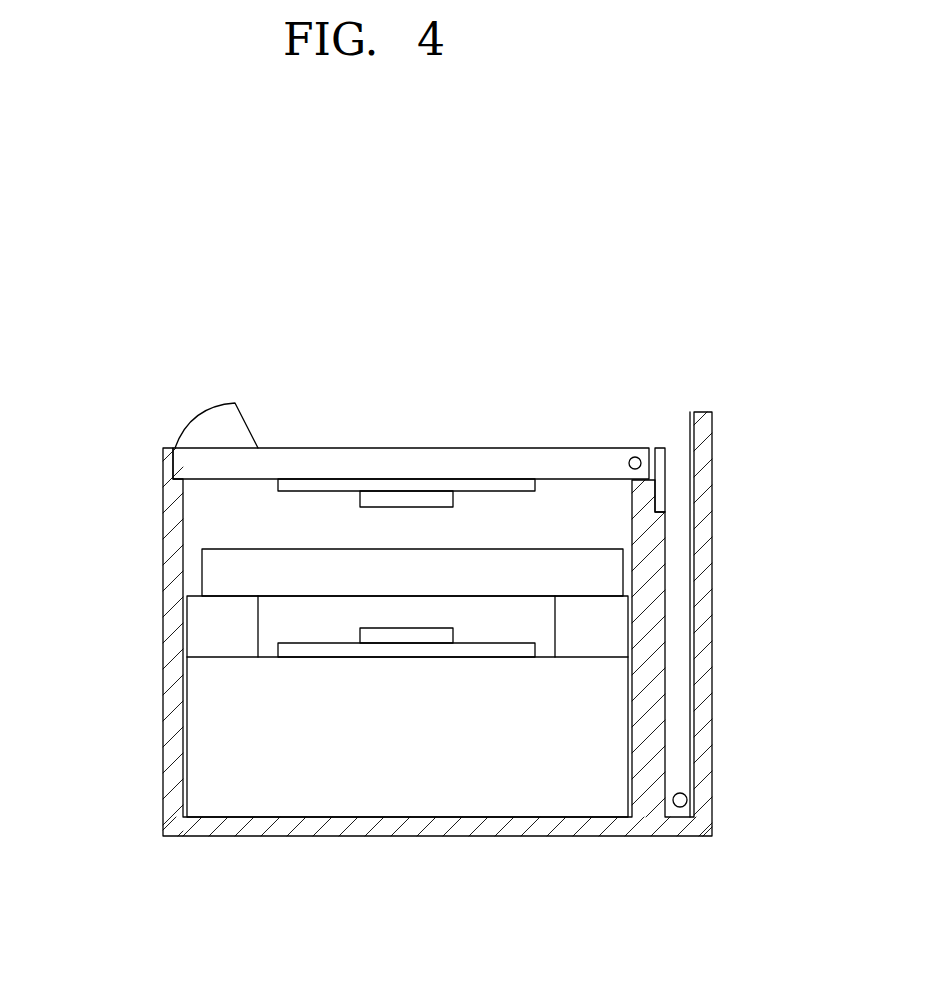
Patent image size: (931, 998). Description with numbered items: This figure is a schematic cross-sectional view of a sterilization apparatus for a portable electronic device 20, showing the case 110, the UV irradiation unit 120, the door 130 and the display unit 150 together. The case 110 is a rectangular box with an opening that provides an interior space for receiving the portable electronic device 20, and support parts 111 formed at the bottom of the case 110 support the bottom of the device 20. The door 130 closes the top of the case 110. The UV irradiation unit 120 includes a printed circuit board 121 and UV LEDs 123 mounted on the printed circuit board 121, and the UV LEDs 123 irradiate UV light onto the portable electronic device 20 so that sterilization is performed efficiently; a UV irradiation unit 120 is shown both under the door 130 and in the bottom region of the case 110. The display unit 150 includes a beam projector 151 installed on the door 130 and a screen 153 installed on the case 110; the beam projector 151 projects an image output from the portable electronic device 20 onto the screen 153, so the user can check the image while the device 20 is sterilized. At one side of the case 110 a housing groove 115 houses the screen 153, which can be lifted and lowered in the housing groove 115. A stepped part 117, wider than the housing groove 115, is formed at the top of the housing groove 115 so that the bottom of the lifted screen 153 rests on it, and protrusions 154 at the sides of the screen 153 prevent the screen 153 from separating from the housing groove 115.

The portable electronic device 20 is at (235, 562).
The case 110 is at (173, 700).
The support parts 111 is at (213, 630).
The housing groove 115 is at (678, 640).
The stepped part 117 is at (660, 506).
The UV irradiation unit 120 is at (412, 643).
The printed circuit board 121 is at (505, 485).
The UV LEDs 123 is at (432, 497).
The door 130 is at (325, 455).
The display unit 150 is at (426, 358).
The beam projector 151 is at (227, 423).
The screen 153 is at (677, 463).
The protrusions 154 is at (680, 800).